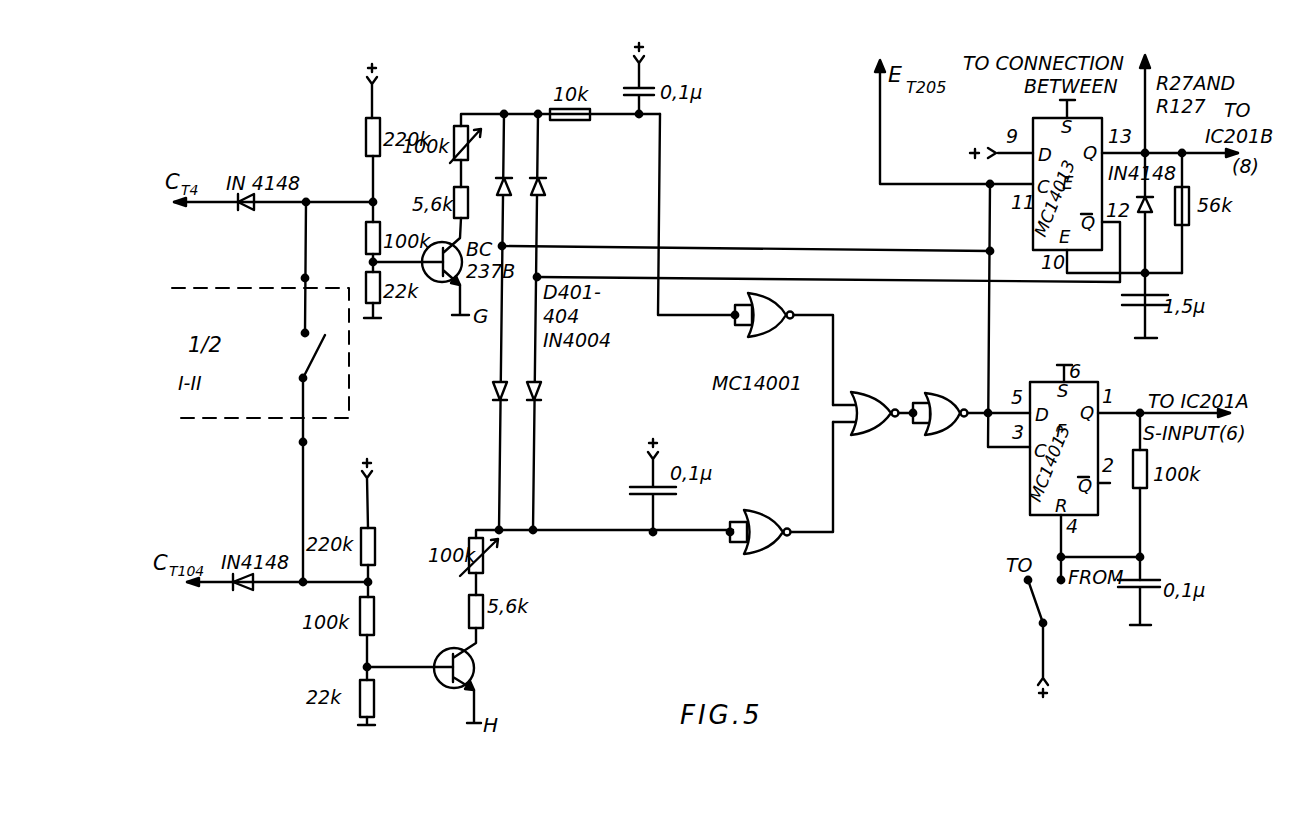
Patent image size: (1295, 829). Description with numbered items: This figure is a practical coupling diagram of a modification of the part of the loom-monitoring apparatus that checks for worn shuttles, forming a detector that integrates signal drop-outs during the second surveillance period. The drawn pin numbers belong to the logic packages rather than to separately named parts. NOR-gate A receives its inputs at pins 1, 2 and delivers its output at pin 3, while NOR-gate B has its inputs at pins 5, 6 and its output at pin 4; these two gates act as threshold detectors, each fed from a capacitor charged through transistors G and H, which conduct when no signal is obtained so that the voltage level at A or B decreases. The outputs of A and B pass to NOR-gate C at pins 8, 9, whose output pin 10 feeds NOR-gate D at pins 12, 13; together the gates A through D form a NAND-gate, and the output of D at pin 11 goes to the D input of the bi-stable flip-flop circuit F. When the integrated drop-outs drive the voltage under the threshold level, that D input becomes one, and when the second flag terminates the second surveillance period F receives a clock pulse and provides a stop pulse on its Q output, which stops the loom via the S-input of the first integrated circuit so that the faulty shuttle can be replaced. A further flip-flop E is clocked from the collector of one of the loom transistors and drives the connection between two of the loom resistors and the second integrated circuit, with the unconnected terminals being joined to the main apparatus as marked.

The NOR gate A input pin 1 / flip-flop F Q output pin 1 is at (776, 343).
The NOR gate A input pin 2 / flip-flop F Q-bar pin 2 is at (777, 347).
The NOR gate A output pin 3 / flip-flop F clock pin 3 is at (782, 347).
The NOR gate B output pin 4 / flip-flop F reset pin 4 is at (777, 495).
The NOR gate B input pin 5 / flip-flop F data pin 5 is at (777, 495).
The NOR gate B input pin 6 / flip-flop F set pin 6 is at (778, 495).
The NOR gate C input pin 8 is at (873, 409).
The NOR gate C input pin 9 / flip-flop E data pin 9 is at (873, 409).
The NOR gate C output pin 10 / flip-flop E pin 10 is at (873, 404).
The NOR gate D output pin 11 / flip-flop E clock pin 11 is at (963, 411).
The NOR gate D input pin 12 / flip-flop E Q-bar pin 12 is at (963, 411).
The NOR gate D input pin 13 / flip-flop E Q output pin 13 is at (963, 420).